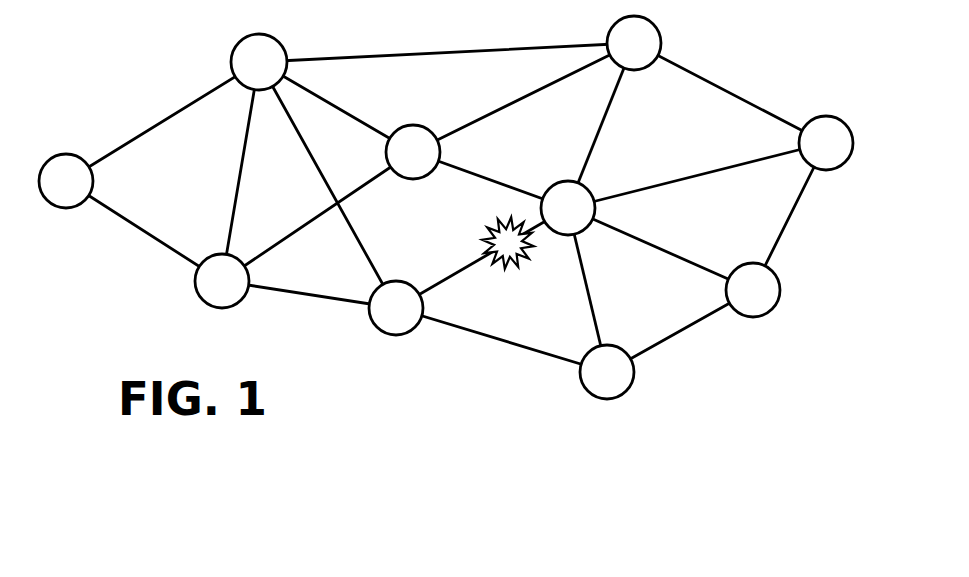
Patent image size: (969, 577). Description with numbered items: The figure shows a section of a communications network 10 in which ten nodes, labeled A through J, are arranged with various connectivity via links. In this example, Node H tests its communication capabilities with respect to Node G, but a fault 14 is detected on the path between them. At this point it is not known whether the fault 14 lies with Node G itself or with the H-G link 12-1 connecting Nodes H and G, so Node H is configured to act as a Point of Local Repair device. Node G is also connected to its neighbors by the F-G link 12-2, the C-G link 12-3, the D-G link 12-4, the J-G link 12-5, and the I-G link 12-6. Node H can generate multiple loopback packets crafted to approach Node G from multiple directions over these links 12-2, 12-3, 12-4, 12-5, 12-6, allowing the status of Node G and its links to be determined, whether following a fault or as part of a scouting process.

The network 10 is at (448, 230).
The H-G link 12-1 is at (456, 271).
The F-G link 12-2 is at (490, 181).
The C-G link 12-3 is at (601, 123).
The D-G link 12-4 is at (675, 180).
The J-G link 12-5 is at (647, 242).
The I-G link 12-6 is at (588, 288).
The fault 14 is at (524, 262).